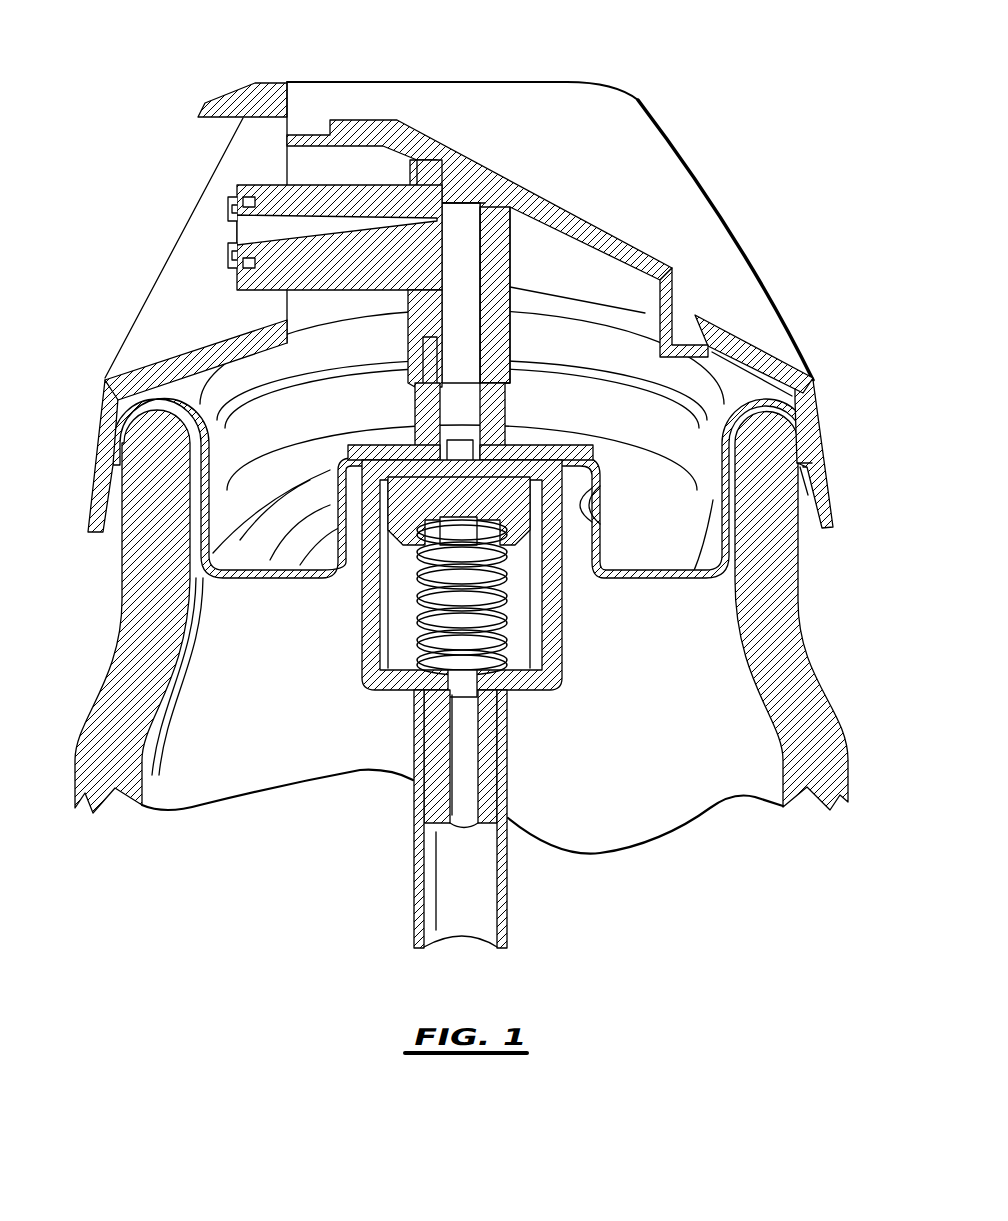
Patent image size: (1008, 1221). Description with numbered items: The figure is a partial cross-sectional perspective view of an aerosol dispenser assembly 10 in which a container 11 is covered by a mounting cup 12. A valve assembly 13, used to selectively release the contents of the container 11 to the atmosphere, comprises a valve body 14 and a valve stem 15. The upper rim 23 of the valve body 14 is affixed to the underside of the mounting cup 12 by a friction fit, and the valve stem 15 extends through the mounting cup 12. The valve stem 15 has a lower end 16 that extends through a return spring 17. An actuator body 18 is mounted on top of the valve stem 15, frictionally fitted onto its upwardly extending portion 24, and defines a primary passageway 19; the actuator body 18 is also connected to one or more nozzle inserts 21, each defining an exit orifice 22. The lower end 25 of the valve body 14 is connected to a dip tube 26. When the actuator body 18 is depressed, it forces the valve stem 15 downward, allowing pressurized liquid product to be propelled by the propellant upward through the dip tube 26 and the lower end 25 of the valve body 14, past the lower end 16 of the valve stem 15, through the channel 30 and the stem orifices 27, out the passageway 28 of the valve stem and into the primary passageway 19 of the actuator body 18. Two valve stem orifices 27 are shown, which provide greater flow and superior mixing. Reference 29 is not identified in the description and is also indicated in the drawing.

The aerosol dispenser assembly 10 is at (729, 155).
The container 11 is at (807, 620).
The mounting cup 12 is at (741, 357).
The valve assembly 13 is at (350, 568).
The valve body 14 is at (567, 613).
The valve stem 15 is at (515, 399).
The lower end 16 is at (400, 552).
The return spring 17 is at (412, 636).
The actuator body 18 is at (513, 270).
The primary passageway 19 is at (460, 233).
The nozzle inserts 21 is at (213, 217).
The exit orifice 22 is at (225, 208).
The upper rim 23 is at (573, 478).
The upwardly extending portion 24 is at (490, 353).
The lower end 25 is at (487, 750).
The dip tube 26 is at (510, 880).
The valve stem orifice 27 is at (523, 467).
The passageway 28 is at (440, 397).
The insert 29 is at (250, 207).
The channel 30 is at (537, 520).